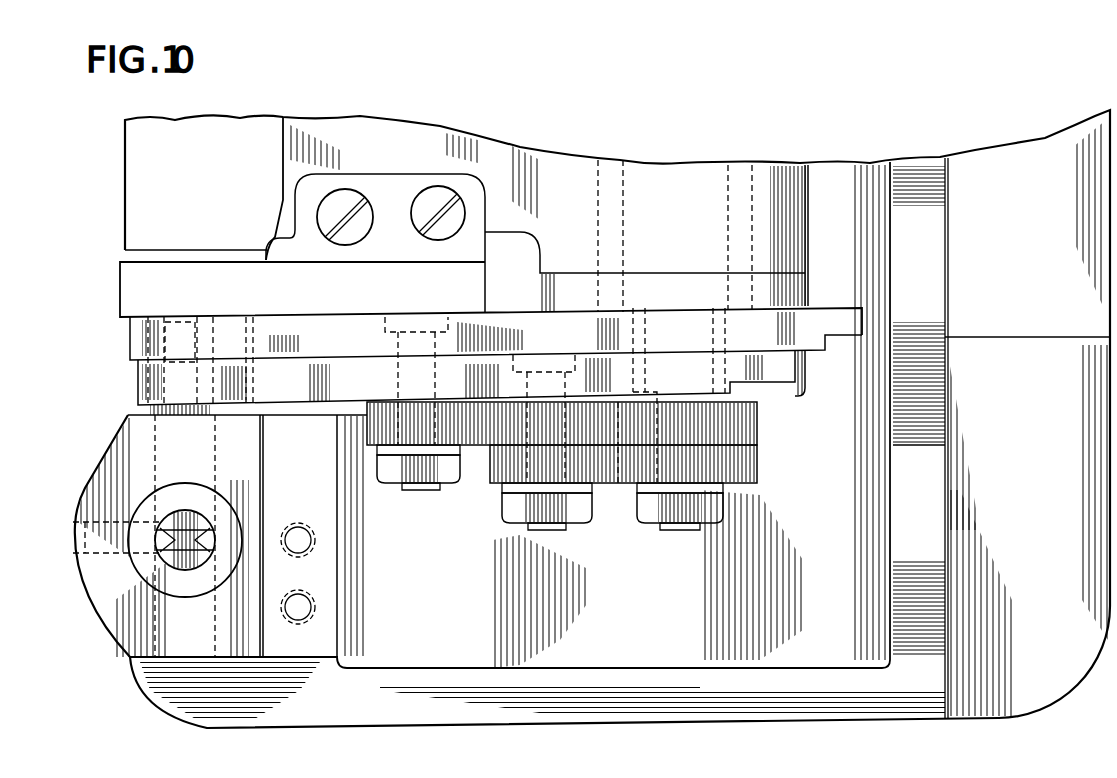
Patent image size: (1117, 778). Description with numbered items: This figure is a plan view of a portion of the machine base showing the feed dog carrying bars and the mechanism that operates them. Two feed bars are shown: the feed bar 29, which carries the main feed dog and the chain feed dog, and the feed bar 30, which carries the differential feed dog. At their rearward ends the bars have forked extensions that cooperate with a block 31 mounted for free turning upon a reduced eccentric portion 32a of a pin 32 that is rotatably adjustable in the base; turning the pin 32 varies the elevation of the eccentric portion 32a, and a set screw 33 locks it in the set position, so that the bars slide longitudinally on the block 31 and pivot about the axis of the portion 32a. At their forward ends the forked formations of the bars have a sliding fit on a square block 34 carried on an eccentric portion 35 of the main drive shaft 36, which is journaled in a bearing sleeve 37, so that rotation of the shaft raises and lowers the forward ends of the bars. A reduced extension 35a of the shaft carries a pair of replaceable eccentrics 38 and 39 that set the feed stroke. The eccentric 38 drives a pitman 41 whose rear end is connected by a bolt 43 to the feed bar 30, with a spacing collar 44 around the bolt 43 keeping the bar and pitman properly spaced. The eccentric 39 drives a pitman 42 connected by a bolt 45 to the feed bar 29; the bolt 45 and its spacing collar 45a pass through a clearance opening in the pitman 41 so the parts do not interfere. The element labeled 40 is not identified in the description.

The feed bar 29 is at (500, 362).
The feed bar 30 is at (355, 322).
The block 31 is at (262, 324).
The pin 32 is at (152, 467).
The reduced eccentric portion 32a is at (212, 328).
The set screw 33 is at (103, 545).
The square block 34 is at (725, 335).
The eccentric portion 35 is at (635, 322).
The reduced extension 35a is at (672, 412).
The main drive shaft 36 is at (730, 195).
The bearing sleeve 37 is at (598, 208).
The eccentric 38 is at (612, 430).
The eccentric 39 is at (616, 472).
The bolt 40 is at (645, 512).
The pitman 41 is at (760, 420).
The pitman 42 is at (760, 467).
The bolt 43 is at (410, 487).
The spacing collar 44 is at (383, 388).
The bolt 45 is at (560, 526).
The spacing collar 45a is at (510, 468).